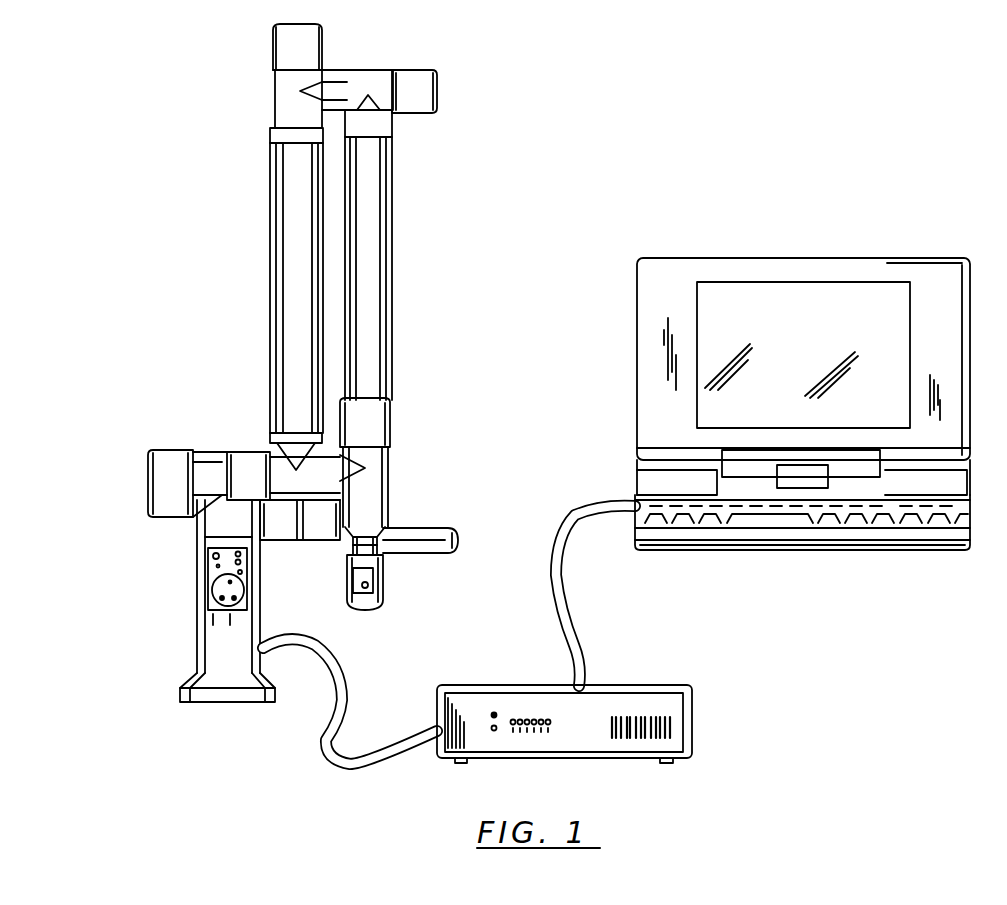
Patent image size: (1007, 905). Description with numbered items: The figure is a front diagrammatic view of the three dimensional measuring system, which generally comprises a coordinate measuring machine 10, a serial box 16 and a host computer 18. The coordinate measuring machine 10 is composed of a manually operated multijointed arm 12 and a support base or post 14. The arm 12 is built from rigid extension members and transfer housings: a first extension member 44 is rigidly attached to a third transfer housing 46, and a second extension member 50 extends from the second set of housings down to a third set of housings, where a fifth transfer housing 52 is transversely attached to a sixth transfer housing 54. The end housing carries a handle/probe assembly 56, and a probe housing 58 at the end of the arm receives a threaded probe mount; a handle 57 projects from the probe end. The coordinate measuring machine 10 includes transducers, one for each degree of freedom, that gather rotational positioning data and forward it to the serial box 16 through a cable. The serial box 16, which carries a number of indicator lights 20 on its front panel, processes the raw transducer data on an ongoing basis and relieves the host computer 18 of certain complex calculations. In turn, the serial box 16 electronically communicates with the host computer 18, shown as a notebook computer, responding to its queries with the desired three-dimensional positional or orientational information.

The coordinate measuring machine 10 is at (464, 276).
The multijointed arm 12 is at (396, 219).
The support base 14 is at (195, 588).
The serial box 16 is at (584, 716).
The host computer 18 is at (767, 255).
The indicator lights 20 is at (530, 735).
The first extension member 44 is at (392, 338).
The third transfer housing 46 is at (385, 72).
The second extension member 50 is at (270, 299).
The fifth transfer housing 52 is at (243, 452).
The sixth transfer housing 54 is at (388, 479).
The handle/probe assembly 56 is at (385, 578).
The handle 57 is at (445, 529).
The probe housing 58 is at (345, 548).